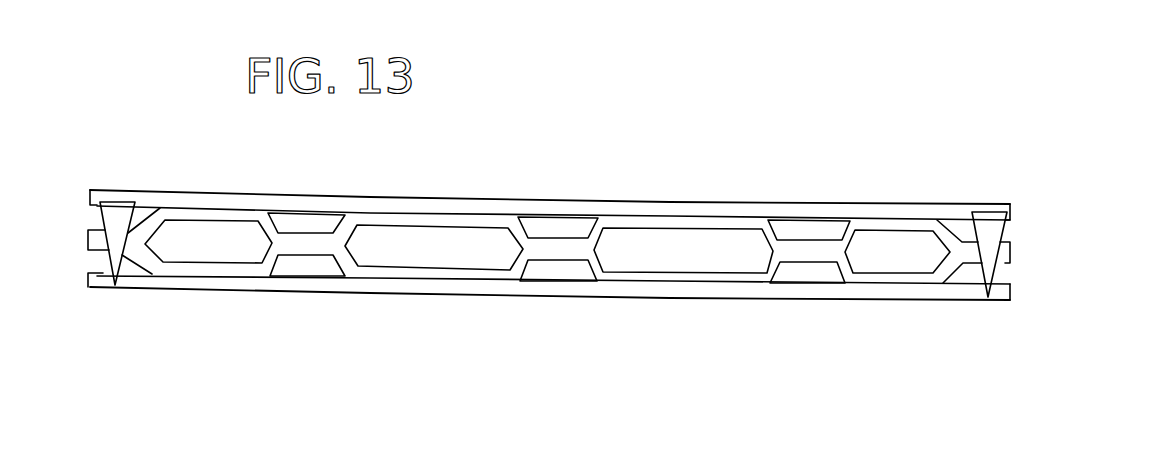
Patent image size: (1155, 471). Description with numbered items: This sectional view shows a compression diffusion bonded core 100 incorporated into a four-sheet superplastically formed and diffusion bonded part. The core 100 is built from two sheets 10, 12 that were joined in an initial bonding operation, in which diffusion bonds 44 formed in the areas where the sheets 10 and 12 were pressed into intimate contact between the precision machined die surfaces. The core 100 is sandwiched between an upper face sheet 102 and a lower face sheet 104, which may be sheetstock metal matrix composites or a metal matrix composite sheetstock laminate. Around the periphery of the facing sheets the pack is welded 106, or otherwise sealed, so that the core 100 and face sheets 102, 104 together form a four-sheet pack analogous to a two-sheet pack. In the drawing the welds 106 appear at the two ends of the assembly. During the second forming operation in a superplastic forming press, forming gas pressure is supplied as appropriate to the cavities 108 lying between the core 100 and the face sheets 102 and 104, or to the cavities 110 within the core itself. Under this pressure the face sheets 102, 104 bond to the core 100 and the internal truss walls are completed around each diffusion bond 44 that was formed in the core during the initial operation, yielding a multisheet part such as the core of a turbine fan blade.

The core 100 is at (1040, 252).
The face sheet 102 is at (116, 186).
The face sheet 104 is at (892, 310).
The weld 106 is at (104, 290).
The cavity 108 is at (310, 268).
The cavity 110 is at (547, 245).
The diffusion bond 44 is at (316, 216).
The sheet 12 is at (712, 230).
The sheet 10 is at (660, 268).